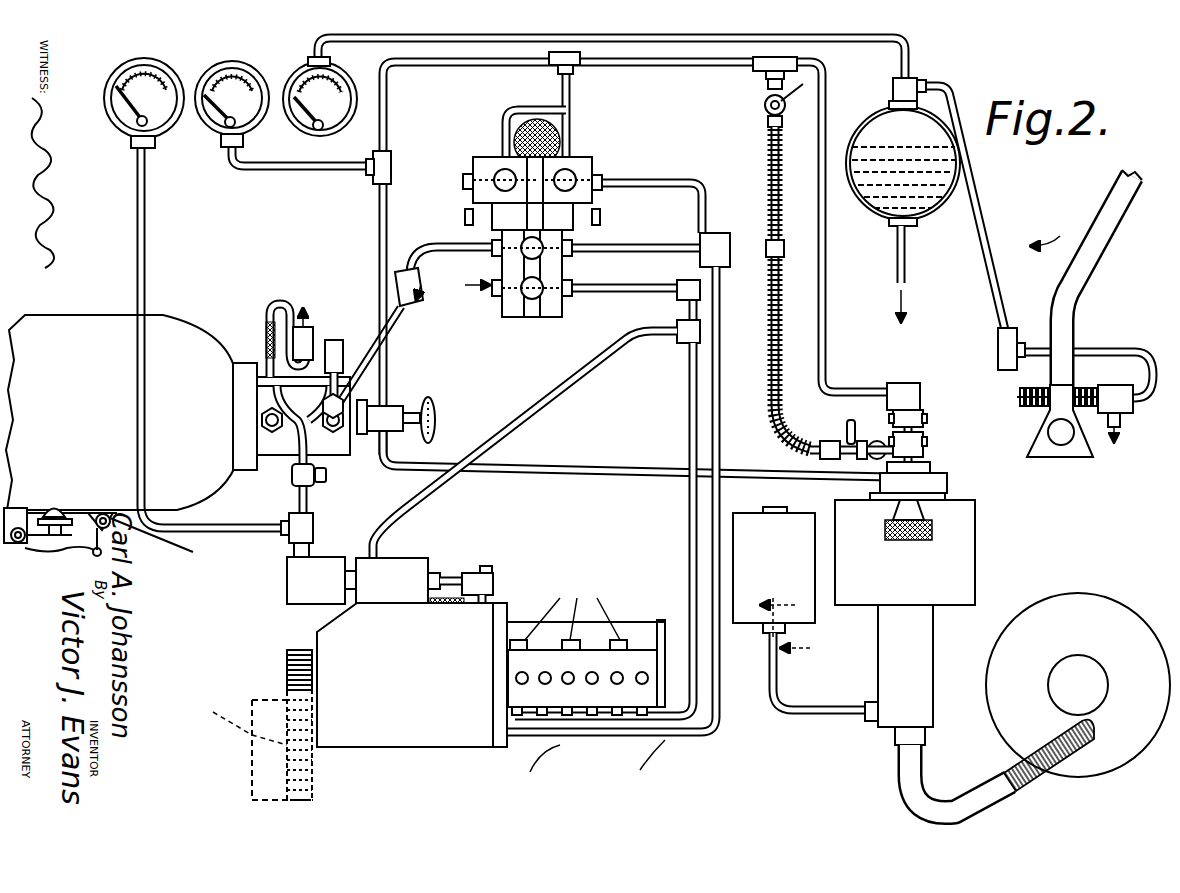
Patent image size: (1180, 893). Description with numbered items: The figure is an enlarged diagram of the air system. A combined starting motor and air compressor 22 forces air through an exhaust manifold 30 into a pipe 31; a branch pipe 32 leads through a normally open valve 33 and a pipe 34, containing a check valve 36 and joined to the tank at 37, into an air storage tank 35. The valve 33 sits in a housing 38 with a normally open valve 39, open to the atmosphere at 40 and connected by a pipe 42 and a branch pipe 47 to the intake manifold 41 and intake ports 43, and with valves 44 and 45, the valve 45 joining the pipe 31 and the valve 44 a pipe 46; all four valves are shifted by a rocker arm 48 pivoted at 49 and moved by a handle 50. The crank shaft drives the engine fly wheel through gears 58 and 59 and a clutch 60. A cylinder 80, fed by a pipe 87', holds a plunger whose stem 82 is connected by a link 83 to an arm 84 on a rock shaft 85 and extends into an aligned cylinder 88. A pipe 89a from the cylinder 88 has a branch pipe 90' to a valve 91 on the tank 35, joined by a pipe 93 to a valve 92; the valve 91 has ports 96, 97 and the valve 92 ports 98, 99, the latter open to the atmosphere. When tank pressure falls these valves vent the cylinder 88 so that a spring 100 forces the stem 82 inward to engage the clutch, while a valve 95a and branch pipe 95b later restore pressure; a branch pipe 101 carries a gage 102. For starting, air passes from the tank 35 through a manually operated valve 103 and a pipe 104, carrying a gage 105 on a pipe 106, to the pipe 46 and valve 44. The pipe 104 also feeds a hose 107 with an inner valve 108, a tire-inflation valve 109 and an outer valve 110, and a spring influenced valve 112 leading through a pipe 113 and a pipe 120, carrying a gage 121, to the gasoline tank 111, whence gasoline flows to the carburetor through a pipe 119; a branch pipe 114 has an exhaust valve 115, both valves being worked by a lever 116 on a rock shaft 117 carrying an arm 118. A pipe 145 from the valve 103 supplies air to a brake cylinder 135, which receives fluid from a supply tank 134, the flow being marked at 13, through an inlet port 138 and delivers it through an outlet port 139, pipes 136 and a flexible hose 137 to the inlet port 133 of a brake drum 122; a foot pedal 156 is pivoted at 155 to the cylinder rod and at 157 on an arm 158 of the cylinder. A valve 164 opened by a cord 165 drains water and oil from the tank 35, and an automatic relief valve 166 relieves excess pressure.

The air conduit 13 is at (811, 643).
The combined starting motor and air compressor 22 is at (637, 655).
The exhaust manifold 30 is at (625, 730).
The pipe 31 is at (724, 391).
The branch pipe 32 is at (650, 254).
The normally open valve 33 is at (545, 257).
The pipe 34 is at (430, 250).
The air storage tank 35 is at (68, 330).
The check valve 36 is at (397, 284).
The pipe connection to tank 37 is at (326, 464).
The valve housing 38 is at (564, 311).
The normally open valve 39 is at (527, 300).
The atmospheric opening 40 is at (490, 288).
The intake manifold 41 is at (580, 737).
The pipe 42 is at (695, 437).
The intake ports 43 is at (548, 716).
The valve 44 is at (578, 178).
The valve 45 is at (496, 173).
The pipe 46 is at (573, 91).
The branch pipe 47 is at (640, 290).
The rocker arm 48 is at (560, 218).
The pivot 49 is at (601, 222).
The operating handle 50 is at (535, 122).
The gear 58 is at (287, 762).
The gear 59 is at (298, 652).
The clutch 60 is at (372, 740).
The cylinder 80 is at (405, 570).
The stem 82 is at (445, 597).
The link 83 is at (486, 590).
The arm 84 is at (421, 651).
The rock shaft 85 is at (410, 616).
The pipe 87' is at (525, 444).
The cylinder 88 is at (322, 575).
The pipe 89a is at (310, 505).
The branch pipe 90' is at (268, 416).
The valve 91 is at (265, 342).
The valve 92 is at (336, 338).
The pipe 93 is at (292, 318).
The valve 95a is at (343, 358).
The branch pipe 95b is at (347, 393).
The intake port 96 is at (266, 325).
The outlet port 97 is at (270, 312).
The intake port 98 is at (305, 327).
The outlet port 99 is at (320, 303).
The spring 100 is at (442, 597).
The branch pipe 101 is at (203, 530).
The pressure indicating gage 102 is at (150, 57).
The manually operated valve 103 is at (403, 406).
The pipe 104 is at (378, 240).
The pressure indicating gage 105 is at (240, 78).
The pipe 106 is at (262, 170).
The flexible pipe or hose 107 is at (740, 319).
The manually operated valve 108 is at (768, 108).
The valve 109 is at (877, 441).
The manually operated valve 110 is at (850, 441).
The gasoline supply tank 111 is at (928, 212).
The spring influenced valve 112 is at (928, 400).
The pipe 113 is at (986, 198).
The branch pipe 114 is at (1116, 352).
The spring influenced exhaust valve 115 is at (1116, 414).
The lever 116 is at (1080, 218).
The rock shaft 117 is at (1058, 443).
The arm 118 is at (1065, 380).
The pipe 119 is at (905, 270).
The pipe 120 is at (663, 42).
The pressure indicating gage 121 is at (332, 82).
The brake drum 122 is at (1105, 760).
The inlet port 133 is at (1085, 736).
The supply tank 134 is at (818, 505).
The brake cylinder 135 is at (933, 629).
The pipes 136 is at (903, 776).
The flexible hose 137 is at (1033, 770).
The inlet port 138 is at (868, 704).
The outlet port 139 is at (922, 738).
The pipe 145 is at (578, 468).
The pivotal connection 155 is at (920, 422).
The foot pedal 156 is at (905, 542).
The pivot 157 is at (927, 447).
The arm 158 is at (932, 470).
The valve 164 is at (40, 545).
The cord or flexible element 165 is at (163, 552).
The automatic relief valve 166 is at (272, 434).